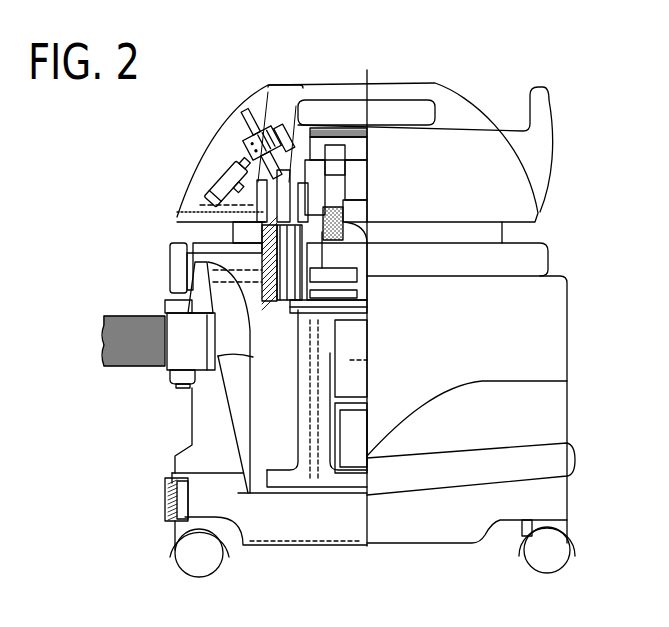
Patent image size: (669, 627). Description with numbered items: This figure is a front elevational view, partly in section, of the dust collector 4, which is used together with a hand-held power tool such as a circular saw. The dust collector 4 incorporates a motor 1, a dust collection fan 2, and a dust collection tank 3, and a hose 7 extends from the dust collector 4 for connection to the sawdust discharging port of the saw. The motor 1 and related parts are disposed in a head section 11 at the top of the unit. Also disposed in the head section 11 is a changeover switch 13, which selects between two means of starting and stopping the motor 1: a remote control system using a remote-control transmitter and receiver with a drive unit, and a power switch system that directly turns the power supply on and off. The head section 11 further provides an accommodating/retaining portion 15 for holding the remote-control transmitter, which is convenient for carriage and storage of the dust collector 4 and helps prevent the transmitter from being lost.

The motor 1 is at (368, 217).
The dust collection fan 2 is at (333, 300).
The dust collection tank 3 is at (334, 556).
The dust collector 4 is at (567, 313).
The hose 7 is at (138, 371).
The head section 11 is at (468, 62).
The changeover switch 13 is at (247, 123).
The accommodating/retaining portion 15 is at (210, 182).